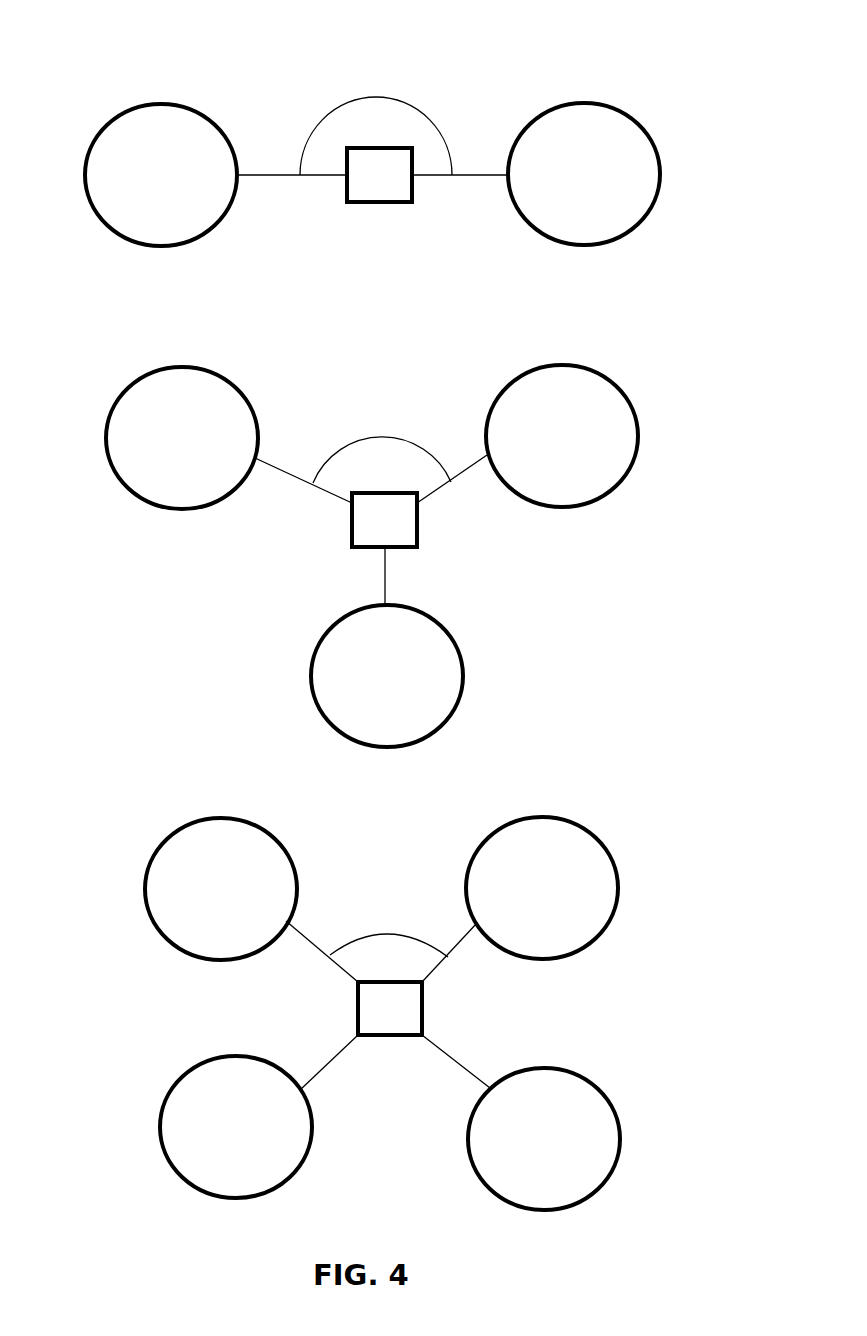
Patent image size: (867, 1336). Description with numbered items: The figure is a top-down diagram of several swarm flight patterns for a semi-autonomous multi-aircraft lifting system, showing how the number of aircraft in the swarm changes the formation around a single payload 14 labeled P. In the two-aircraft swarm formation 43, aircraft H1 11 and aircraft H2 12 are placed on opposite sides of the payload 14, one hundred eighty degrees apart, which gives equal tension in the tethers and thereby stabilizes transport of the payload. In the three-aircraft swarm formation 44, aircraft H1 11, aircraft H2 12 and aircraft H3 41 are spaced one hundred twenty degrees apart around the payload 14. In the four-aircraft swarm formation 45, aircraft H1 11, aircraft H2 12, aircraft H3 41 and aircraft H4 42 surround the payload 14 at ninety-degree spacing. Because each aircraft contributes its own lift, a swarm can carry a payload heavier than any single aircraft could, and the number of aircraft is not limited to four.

The aircraft H1 11 is at (104, 129).
The aircraft H2 12 is at (542, 118).
The payload 14 is at (400, 202).
The aircraft H3 41 is at (316, 653).
The aircraft H4 42 is at (162, 1118).
The two-aircraft swarm formation 43 is at (784, 141).
The three-aircraft swarm formation 44 is at (787, 453).
The four-aircraft swarm formation 45 is at (792, 905).